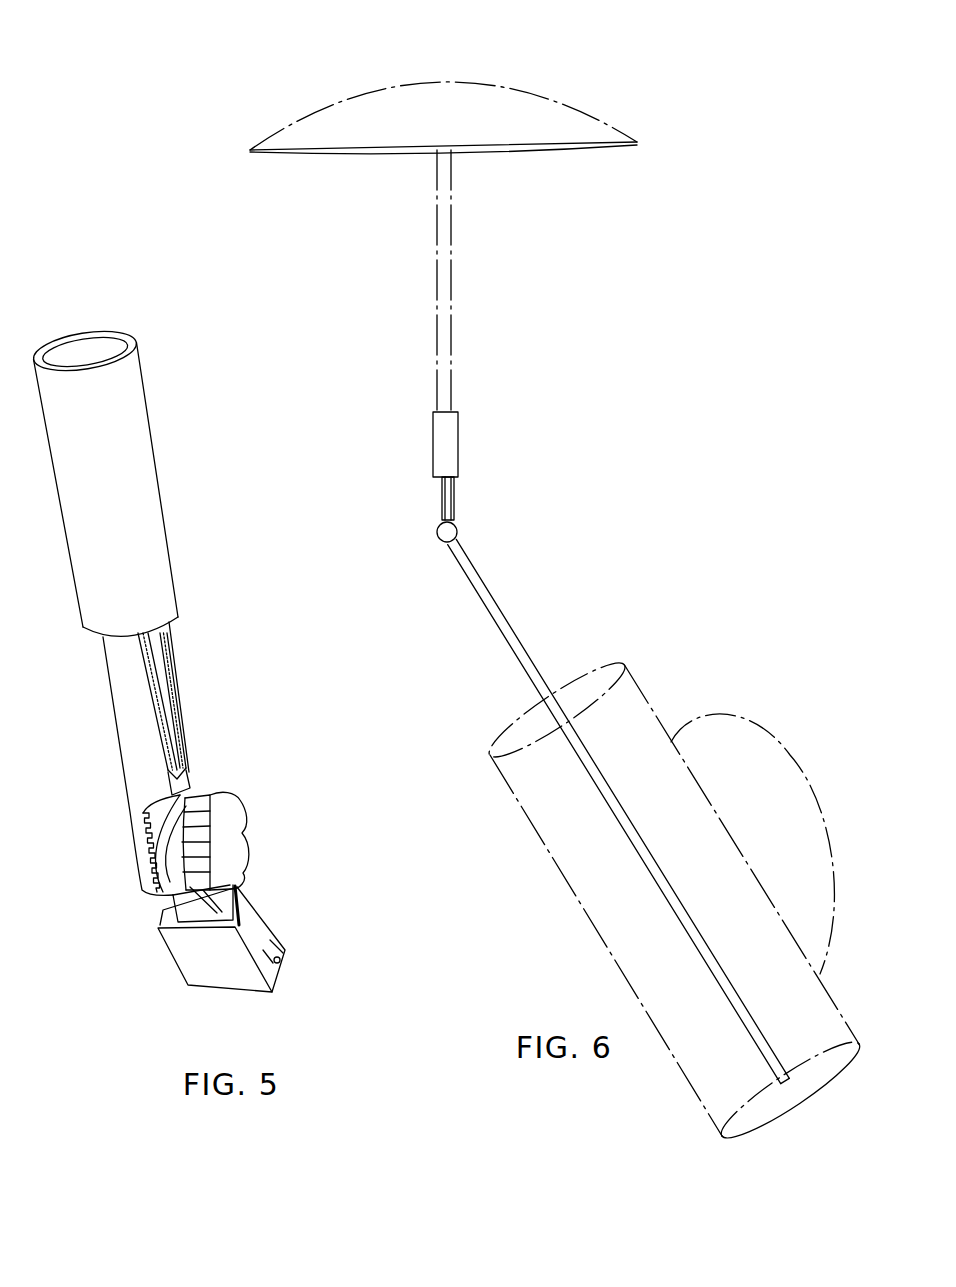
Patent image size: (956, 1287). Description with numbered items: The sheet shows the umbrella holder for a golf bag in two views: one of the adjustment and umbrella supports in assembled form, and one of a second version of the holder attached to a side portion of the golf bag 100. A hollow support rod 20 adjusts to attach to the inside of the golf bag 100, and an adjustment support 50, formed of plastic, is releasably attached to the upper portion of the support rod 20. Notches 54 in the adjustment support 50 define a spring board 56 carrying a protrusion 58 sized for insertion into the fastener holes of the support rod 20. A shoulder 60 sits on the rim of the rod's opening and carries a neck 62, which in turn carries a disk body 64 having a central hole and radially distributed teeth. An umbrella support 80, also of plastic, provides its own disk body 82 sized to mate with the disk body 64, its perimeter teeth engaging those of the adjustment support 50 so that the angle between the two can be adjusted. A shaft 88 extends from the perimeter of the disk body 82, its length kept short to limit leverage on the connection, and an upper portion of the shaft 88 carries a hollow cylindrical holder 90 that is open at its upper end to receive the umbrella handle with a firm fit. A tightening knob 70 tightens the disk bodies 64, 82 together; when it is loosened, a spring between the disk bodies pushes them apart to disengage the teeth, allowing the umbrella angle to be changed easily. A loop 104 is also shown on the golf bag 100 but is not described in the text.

In FIG. 6, the support rod 20 is at (513, 620).
In FIG. 5, the adjustment support 50 is at (263, 917).
In FIG. 6, the adjustment support 50 is at (433, 545).
In FIG. 5, the notches 54 is at (282, 965).
In FIG. 5, the spring board 56 is at (282, 967).
In FIG. 5, the protrusion 58 is at (285, 960).
In FIG. 5, the shoulder 60 is at (245, 908).
In FIG. 5, the neck 62 is at (215, 928).
In FIG. 5, the disk body 64 is at (180, 797).
In FIG. 5, the tightening knob 70 is at (250, 810).
In FIG. 5, the umbrella support 80 is at (203, 483).
In FIG. 6, the umbrella support 80 is at (468, 442).
In FIG. 5, the disk body 82 is at (130, 852).
In FIG. 5, the shaft 88 is at (127, 698).
In FIG. 5, the hollow cylindrical holder 90 is at (130, 413).
In FIG. 6, the golf bag 100 is at (523, 829).
In FIG. 6, the strap handle 104 is at (627, 670).